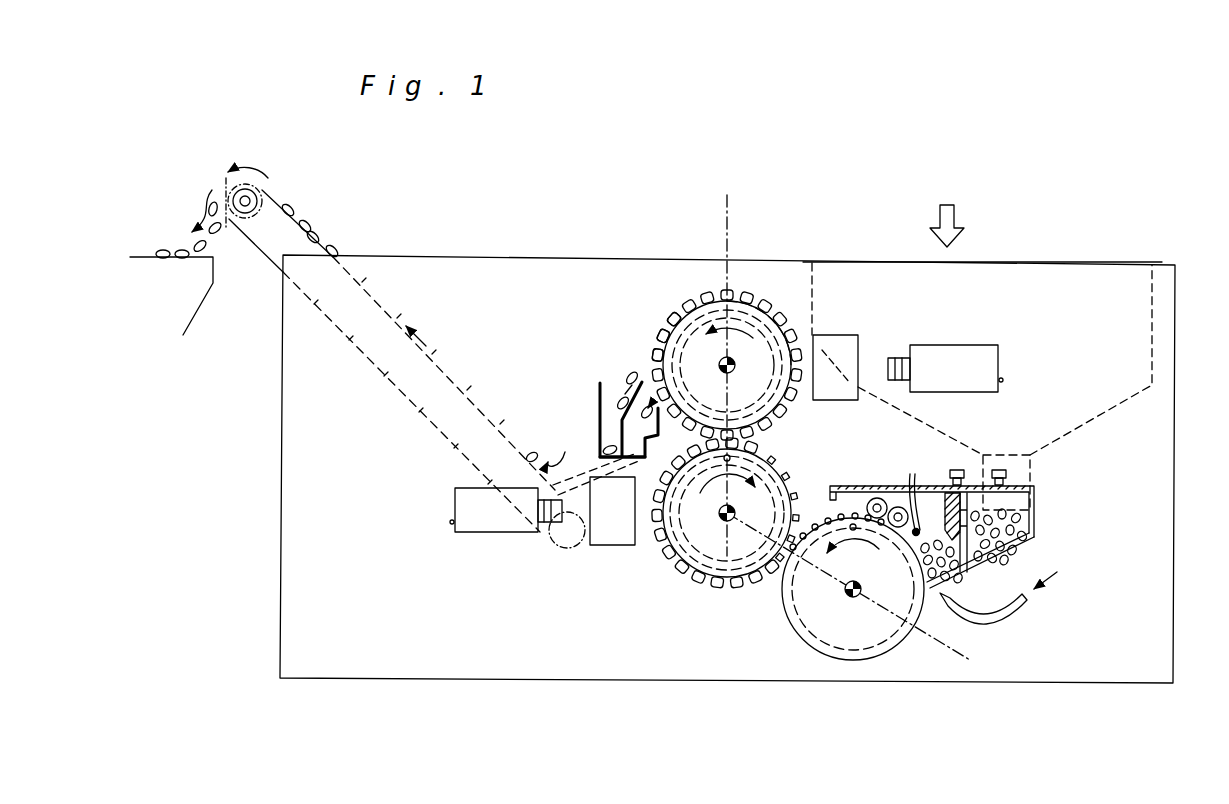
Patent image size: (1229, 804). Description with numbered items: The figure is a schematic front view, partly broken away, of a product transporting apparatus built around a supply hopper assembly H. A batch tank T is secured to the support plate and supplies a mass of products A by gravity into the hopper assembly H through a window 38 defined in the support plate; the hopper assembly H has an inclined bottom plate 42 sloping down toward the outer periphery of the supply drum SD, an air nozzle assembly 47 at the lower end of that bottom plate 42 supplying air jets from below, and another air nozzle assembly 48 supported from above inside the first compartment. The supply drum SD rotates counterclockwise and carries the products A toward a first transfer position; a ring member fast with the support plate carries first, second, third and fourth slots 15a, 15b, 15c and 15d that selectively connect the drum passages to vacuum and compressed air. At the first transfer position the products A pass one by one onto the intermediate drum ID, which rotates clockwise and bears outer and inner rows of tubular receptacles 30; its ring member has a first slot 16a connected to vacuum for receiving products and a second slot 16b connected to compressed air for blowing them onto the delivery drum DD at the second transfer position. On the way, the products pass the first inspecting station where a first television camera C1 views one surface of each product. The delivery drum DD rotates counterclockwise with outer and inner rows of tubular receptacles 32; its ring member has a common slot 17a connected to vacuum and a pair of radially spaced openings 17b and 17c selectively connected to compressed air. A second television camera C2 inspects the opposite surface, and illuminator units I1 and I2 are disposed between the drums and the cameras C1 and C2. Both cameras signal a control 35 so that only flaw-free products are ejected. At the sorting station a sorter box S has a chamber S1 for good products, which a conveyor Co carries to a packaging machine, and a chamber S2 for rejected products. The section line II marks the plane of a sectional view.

The batch tank T is at (1160, 338).
The conveyor Co is at (398, 322).
The products A is at (712, 294).
The section line II- II is at (727, 194).
The tubular receptacles 32 is at (752, 300).
The common slot 17a is at (693, 320).
The opening 17b is at (667, 340).
The opening 17c is at (663, 358).
The delivery drum DD is at (753, 353).
The illuminator unit I1 is at (848, 350).
The second television camera C2 is at (966, 358).
The control 35 is at (1003, 380).
The sorter box S is at (595, 388).
The chamber S1 is at (612, 418).
The chamber S2 is at (626, 432).
The illuminator unit I2 is at (612, 530).
The first television camera C1 is at (500, 527).
The intermediate drum ID is at (708, 538).
The tubular receptacles 30 is at (788, 482).
The second slot 16b is at (731, 457).
The first slot 16a is at (702, 587).
The supply drum SD is at (853, 634).
The fourth slot 15d is at (785, 568).
The third slot 15c is at (812, 540).
The second slot 15b is at (848, 534).
The first slot 15a is at (915, 580).
The supply hopper assembly H is at (1040, 500).
The air nozzle assembly 47 is at (937, 598).
The air nozzle assembly 48 is at (920, 528).
The window 38 is at (1018, 487).
The bottom plate 42 is at (1035, 540).